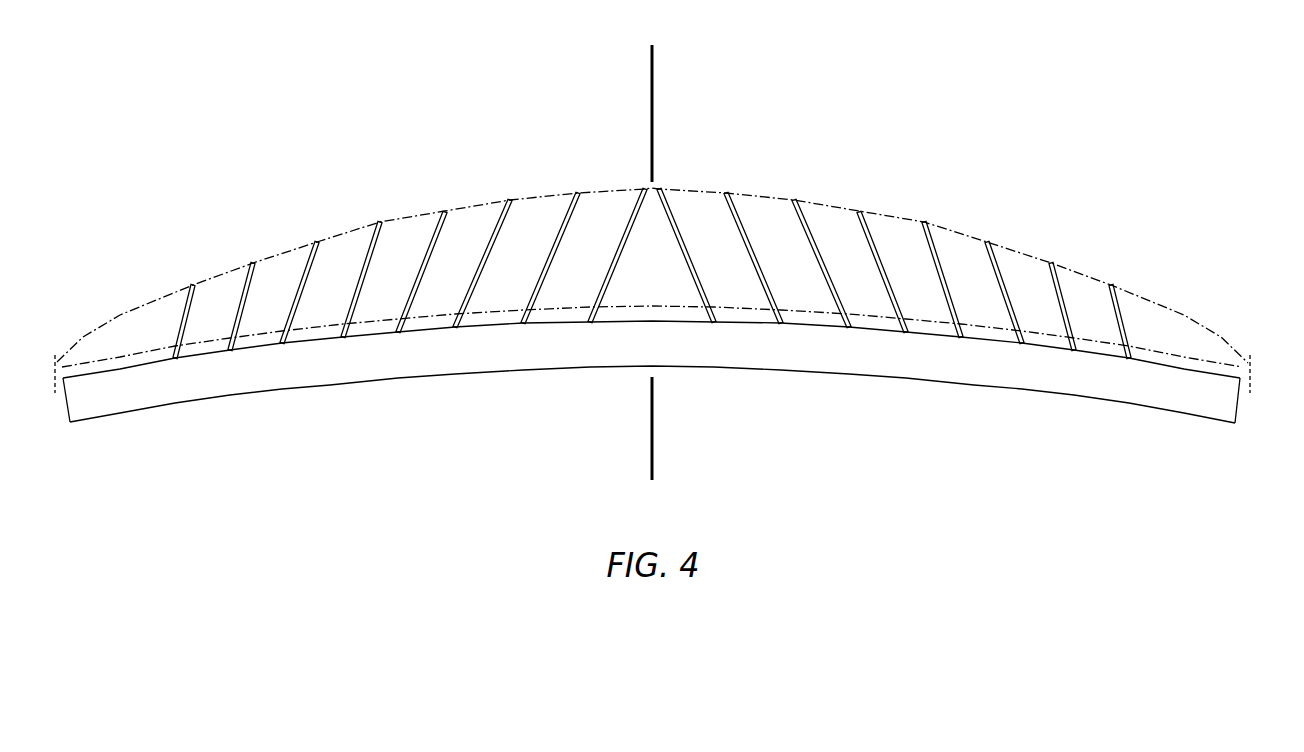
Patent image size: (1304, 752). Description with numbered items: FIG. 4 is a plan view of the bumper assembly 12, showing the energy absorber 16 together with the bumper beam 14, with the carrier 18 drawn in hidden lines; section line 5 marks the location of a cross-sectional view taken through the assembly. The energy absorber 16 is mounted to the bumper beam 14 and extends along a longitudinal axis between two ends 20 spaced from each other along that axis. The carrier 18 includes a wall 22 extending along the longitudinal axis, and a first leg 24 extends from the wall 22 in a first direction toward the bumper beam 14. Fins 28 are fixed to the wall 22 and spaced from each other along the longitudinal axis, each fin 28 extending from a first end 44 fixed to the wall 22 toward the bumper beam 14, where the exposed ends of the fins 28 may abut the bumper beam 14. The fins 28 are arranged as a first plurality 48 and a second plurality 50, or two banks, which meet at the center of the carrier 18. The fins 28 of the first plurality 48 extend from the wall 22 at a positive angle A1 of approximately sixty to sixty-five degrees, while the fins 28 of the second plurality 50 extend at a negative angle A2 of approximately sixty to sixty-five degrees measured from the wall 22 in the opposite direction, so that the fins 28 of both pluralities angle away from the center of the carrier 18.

The section line 5- 5 is at (722, 57).
The bumper assembly 12 is at (1177, 120).
The bumper beam 14 is at (238, 380).
The energy absorber 16 is at (1146, 249).
The carrier 18 is at (184, 283).
The ends 20 is at (57, 362).
The wall 22 is at (634, 190).
The first leg 24 is at (642, 287).
The fins 28 is at (243, 277).
The first end 44 is at (510, 200).
The first plurality of fins 48 is at (657, 151).
The second plurality of fins 50 is at (645, 151).
The positive angle A1 is at (1125, 306).
The negative angle A2 is at (631, 210).